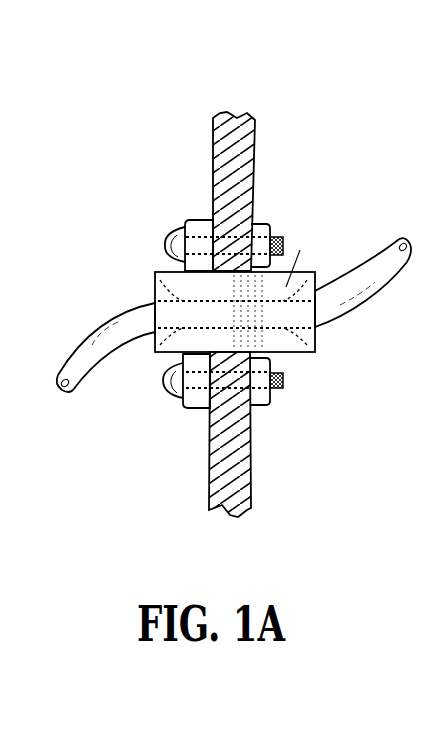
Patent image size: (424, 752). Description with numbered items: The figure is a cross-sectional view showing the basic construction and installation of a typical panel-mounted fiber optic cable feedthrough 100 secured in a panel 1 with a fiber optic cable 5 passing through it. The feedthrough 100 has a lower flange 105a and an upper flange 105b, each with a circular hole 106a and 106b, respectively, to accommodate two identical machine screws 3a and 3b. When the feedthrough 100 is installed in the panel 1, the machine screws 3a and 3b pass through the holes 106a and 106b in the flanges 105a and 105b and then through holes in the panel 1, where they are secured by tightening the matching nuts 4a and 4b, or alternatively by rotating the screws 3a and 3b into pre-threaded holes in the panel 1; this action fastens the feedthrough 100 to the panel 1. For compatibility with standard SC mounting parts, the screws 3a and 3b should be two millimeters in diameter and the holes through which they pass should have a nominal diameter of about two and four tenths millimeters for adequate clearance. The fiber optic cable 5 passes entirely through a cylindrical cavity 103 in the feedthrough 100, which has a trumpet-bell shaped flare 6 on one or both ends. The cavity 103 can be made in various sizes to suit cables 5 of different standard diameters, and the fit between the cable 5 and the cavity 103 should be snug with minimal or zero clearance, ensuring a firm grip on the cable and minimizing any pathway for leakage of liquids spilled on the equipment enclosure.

The panel 1 is at (256, 173).
The machine screw 3a is at (167, 372).
The machine screw 3b is at (168, 229).
The matching nut 4a is at (270, 366).
The matching nut 4b is at (262, 224).
The fiber optic cable 5 is at (86, 334).
The trumpet-bell shaped flare 6 is at (152, 348).
The panel-mounted fiber optic cable feedthrough 100 is at (309, 272).
The cylindrical cavity 103 is at (300, 250).
The lower flange 105a is at (196, 410).
The upper flange 105b is at (192, 219).
The circular hole 106a is at (183, 408).
The circular hole 106b is at (183, 221).